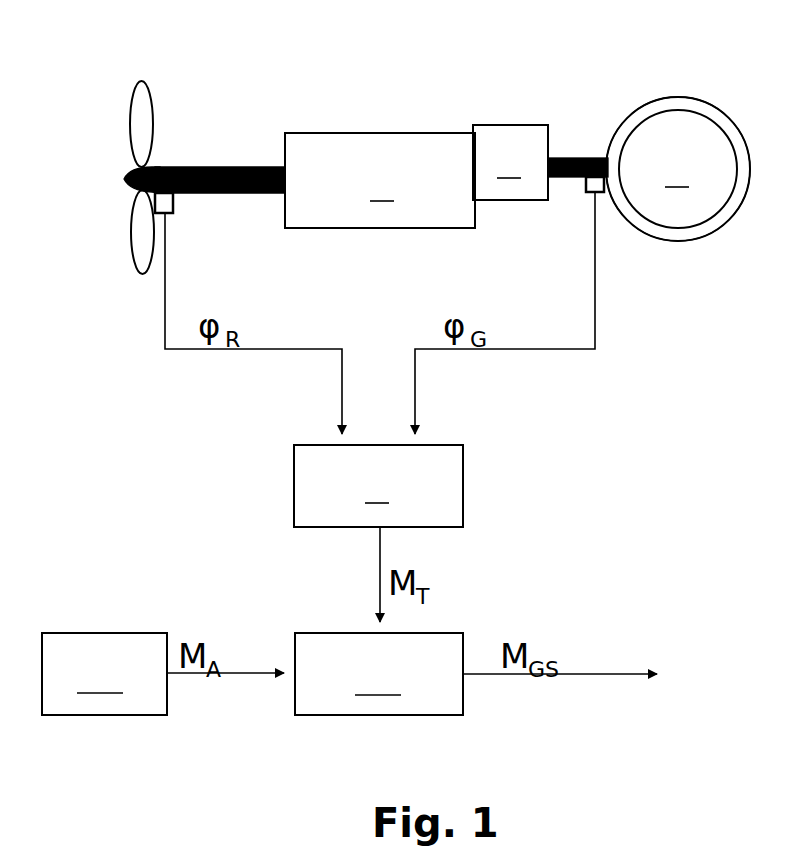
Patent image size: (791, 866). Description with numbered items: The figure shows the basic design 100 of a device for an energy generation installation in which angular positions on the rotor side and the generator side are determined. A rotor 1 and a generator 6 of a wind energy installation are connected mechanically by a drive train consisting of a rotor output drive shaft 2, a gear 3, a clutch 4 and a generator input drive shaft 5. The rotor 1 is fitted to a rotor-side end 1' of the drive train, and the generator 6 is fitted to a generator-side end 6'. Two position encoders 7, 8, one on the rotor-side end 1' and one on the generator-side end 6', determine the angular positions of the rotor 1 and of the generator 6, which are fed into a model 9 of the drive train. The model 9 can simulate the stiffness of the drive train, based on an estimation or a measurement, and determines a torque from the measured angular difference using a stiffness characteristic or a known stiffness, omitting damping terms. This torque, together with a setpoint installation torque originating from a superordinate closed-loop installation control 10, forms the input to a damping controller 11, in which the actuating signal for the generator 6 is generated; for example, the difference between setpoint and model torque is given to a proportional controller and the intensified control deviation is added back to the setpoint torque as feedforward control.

The rotor 1 is at (156, 147).
The rotor-side end 1' is at (176, 110).
The rotor output drive shaft 2 is at (215, 167).
The gear 3 is at (380, 180).
The clutch 4 is at (510, 162).
The generator input drive shaft 5 is at (570, 158).
The generator 6 is at (678, 169).
The generator-side end 6' is at (678, 225).
The position encoder 7 is at (174, 204).
The position encoder 8 is at (588, 193).
The model 9 is at (378, 486).
The superordinate closed-loop installation control 10 is at (104, 674).
The damping controller 11 is at (379, 674).
The basic design 100 is at (655, 442).